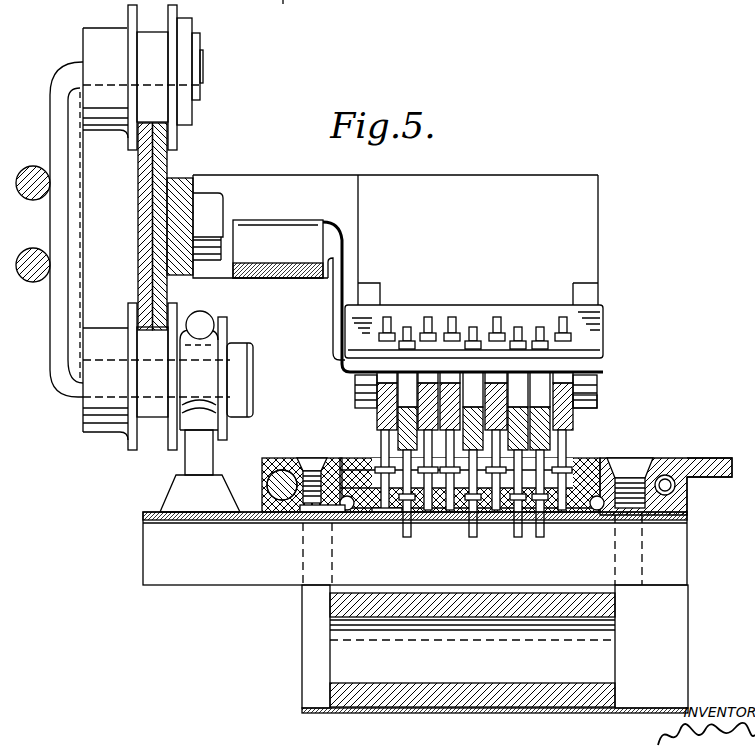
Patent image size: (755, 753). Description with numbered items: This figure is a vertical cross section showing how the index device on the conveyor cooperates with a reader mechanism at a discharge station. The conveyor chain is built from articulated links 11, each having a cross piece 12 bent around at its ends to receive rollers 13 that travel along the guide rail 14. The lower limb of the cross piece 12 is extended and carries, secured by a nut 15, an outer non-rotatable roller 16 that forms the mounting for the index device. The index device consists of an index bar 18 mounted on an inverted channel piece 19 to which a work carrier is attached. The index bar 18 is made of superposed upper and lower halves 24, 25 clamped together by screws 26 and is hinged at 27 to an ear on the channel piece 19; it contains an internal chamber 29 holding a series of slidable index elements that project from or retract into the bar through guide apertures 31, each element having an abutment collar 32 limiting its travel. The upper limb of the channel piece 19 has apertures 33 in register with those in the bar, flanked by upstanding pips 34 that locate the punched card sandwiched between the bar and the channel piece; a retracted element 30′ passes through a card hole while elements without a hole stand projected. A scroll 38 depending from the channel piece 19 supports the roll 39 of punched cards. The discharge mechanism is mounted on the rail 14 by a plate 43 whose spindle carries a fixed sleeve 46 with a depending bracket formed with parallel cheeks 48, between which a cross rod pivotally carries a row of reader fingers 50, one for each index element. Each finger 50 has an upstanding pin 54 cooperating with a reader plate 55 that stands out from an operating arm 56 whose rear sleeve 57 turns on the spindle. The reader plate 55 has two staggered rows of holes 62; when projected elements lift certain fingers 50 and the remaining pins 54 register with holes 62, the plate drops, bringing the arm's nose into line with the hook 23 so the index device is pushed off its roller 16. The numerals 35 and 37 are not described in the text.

The articulated link 11 is at (33, 212).
The cross piece 12 is at (68, 75).
The roller 13 is at (184, 24).
The guide rail 14 is at (140, 177).
The nut 15 is at (254, 381).
The outer roller 16 is at (228, 332).
The index bar 18 is at (576, 461).
The channel piece 19 is at (220, 576).
The hook 23 is at (210, 315).
The upper half 24 is at (606, 462).
The lower half 25 is at (688, 500).
The screw 26 is at (306, 456).
The hinge 27 is at (268, 478).
The internal chamber 29 is at (575, 498).
The retracted index element 30′ is at (402, 537).
The guide aperture 31 is at (382, 460).
The abutment collar 32 is at (342, 458).
The aperture 33 is at (385, 522).
The pip 34 is at (350, 512).
The strip 35 is at (329, 516).
The lever 37 is at (295, 6).
The scroll 38 is at (644, 716).
The roll of punched cards 39 is at (377, 688).
The plate 43 is at (184, 187).
The fixed sleeve 46 is at (571, 177).
The cheek 48 is at (597, 407).
The reader finger 50 is at (356, 392).
The pin 54 is at (475, 326).
The reader plate 55 is at (605, 345).
The operating arm 56 is at (278, 249).
The sleeve 57 is at (283, 178).
The hole 62 is at (520, 328).